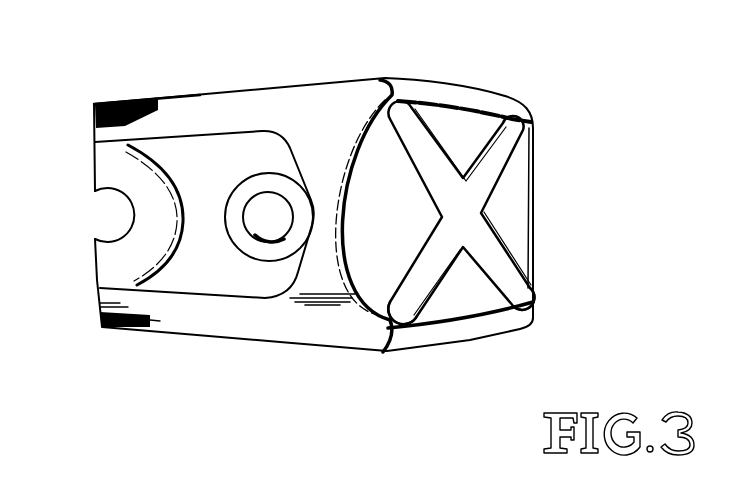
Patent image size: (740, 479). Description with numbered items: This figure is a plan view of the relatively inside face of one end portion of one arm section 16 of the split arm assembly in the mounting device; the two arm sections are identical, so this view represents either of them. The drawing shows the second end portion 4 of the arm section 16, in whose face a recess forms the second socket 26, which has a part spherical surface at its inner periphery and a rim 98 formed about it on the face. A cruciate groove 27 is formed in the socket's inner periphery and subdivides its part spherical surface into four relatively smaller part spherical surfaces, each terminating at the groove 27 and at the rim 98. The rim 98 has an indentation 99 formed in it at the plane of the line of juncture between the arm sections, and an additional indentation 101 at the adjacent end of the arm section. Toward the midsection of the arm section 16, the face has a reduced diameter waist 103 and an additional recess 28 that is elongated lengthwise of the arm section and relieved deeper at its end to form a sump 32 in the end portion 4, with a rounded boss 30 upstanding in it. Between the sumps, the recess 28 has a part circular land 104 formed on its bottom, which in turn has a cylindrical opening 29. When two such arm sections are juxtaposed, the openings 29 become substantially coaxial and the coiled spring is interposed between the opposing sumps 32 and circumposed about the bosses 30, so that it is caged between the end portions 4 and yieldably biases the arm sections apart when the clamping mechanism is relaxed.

The second end portion 4 is at (332, 333).
The arm section 16 is at (357, 98).
The second socket 26 is at (516, 210).
The cruciate groove 27 is at (413, 300).
The recess 28 is at (205, 280).
The cylindrical opening 29 is at (102, 210).
The rounded boss 30 is at (283, 220).
The sump 32 is at (267, 180).
The rim 98 is at (349, 140).
The indentation 99 is at (466, 104).
The additional indentation 101 is at (534, 245).
The reduced diameter waist 103 is at (155, 102).
The part circular land 104 is at (131, 268).